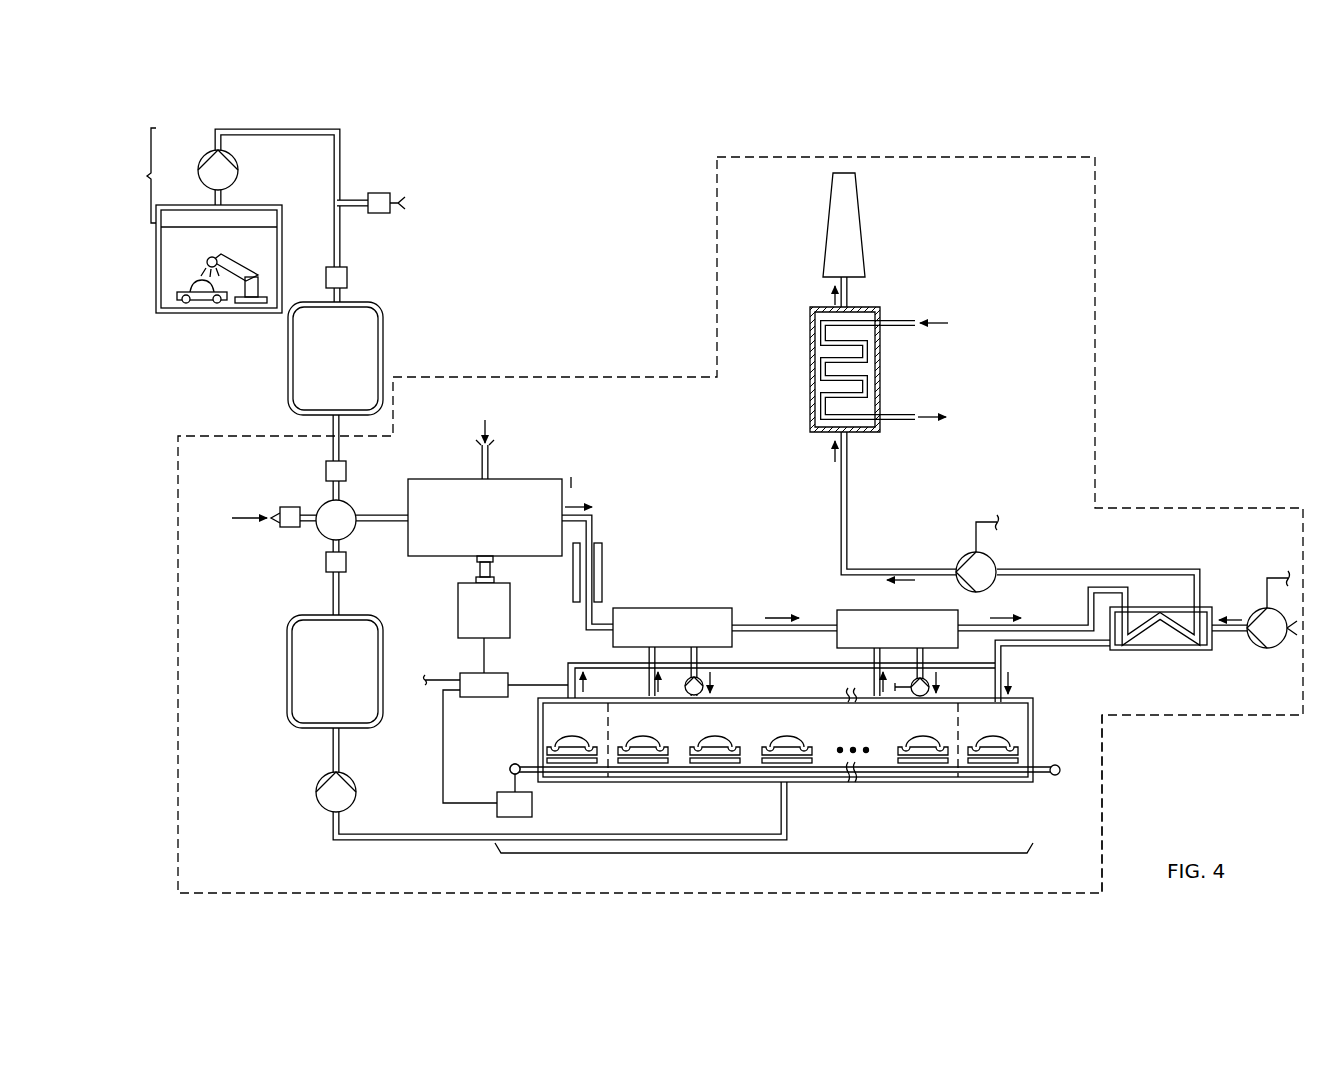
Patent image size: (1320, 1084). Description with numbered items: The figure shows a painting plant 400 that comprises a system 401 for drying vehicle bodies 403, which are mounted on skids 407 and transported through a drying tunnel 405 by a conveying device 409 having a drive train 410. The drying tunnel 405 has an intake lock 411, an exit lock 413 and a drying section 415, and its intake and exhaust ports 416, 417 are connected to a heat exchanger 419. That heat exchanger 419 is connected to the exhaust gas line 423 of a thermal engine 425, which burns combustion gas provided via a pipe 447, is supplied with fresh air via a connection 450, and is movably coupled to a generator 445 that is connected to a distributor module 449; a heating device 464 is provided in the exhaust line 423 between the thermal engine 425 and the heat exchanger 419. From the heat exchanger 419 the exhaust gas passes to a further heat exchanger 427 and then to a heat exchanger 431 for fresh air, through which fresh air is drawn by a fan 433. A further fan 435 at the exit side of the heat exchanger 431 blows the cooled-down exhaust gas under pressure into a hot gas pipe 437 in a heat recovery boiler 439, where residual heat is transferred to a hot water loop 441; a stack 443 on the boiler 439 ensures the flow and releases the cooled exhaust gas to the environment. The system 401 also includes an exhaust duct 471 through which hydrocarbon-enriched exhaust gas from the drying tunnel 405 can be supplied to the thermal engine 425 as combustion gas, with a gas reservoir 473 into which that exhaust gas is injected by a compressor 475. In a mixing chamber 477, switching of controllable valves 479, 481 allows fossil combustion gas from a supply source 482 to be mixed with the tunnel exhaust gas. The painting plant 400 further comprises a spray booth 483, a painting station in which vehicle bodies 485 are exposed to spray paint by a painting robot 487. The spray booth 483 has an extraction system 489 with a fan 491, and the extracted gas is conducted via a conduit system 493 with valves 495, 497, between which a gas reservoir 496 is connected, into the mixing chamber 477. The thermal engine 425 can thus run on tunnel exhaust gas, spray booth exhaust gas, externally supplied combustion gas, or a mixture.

The painting plant 400 is at (1137, 743).
The system for drying vehicle bodies 401 is at (715, 276).
The vehicle bodies 403 is at (565, 740).
The drying tunnel 405 is at (764, 864).
The skids 407 is at (590, 763).
The conveying device 409 is at (1040, 760).
The drive train 410 is at (497, 805).
The intake lock 411 is at (555, 705).
The exit lock 413 is at (1018, 705).
The drying section 415 is at (710, 783).
The intake port 416 is at (694, 696).
The exhaust port 417 is at (650, 700).
The heat exchanger 419 is at (713, 608).
The exhaust gas line 423 is at (586, 612).
The thermal engine 425 is at (440, 478).
The further heat exchanger 427 is at (838, 609).
The heat exchanger for fresh air 431 is at (1150, 652).
The fan 433 is at (1258, 608).
The further fan 435 is at (968, 553).
The hot gas pipe 437 is at (838, 522).
The heat recovery boiler 439 is at (810, 365).
The hot water loop 441 is at (893, 320).
The stack 443 is at (862, 228).
The generator 445 is at (457, 610).
The pipe 447 is at (383, 510).
The distributor module 449 is at (477, 699).
The connection 450 is at (490, 448).
The heating device 464 is at (603, 572).
The exhaust duct 471 is at (400, 832).
The gas reservoir 473 is at (287, 668).
The compressor 475 is at (313, 792).
The mixing chamber 477 is at (350, 536).
The controllable valve 479 is at (325, 562).
The controllable valve 481 is at (280, 507).
The supply source 482 is at (270, 527).
The spray booth 483 is at (284, 236).
The vehicle bodies 485 is at (199, 304).
The painting robot 487 is at (243, 305).
The extraction system 489 is at (134, 175).
The fan 491 is at (238, 176).
The conduit system 493 is at (341, 163).
The valve 495 is at (378, 213).
The gas reservoir 496 is at (384, 320).
The valve 497 is at (323, 472).